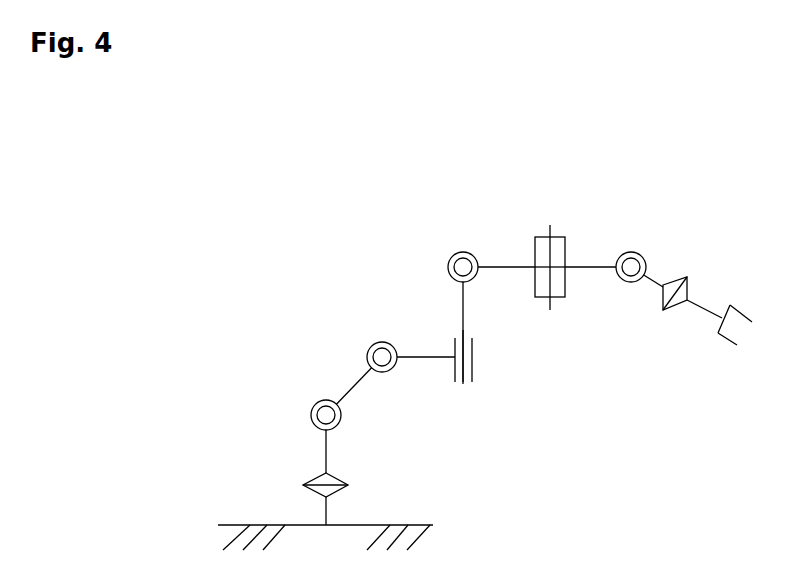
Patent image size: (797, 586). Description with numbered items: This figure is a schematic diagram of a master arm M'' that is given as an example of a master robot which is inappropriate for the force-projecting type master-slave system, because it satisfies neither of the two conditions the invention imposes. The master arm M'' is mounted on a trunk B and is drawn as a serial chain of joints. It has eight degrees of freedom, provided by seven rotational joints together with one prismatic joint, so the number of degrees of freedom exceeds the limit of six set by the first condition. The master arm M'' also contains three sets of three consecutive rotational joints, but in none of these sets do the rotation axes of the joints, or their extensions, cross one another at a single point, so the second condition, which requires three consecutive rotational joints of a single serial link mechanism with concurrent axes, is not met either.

The master arm M'' is at (494, 333).
The trunk B is at (256, 524).